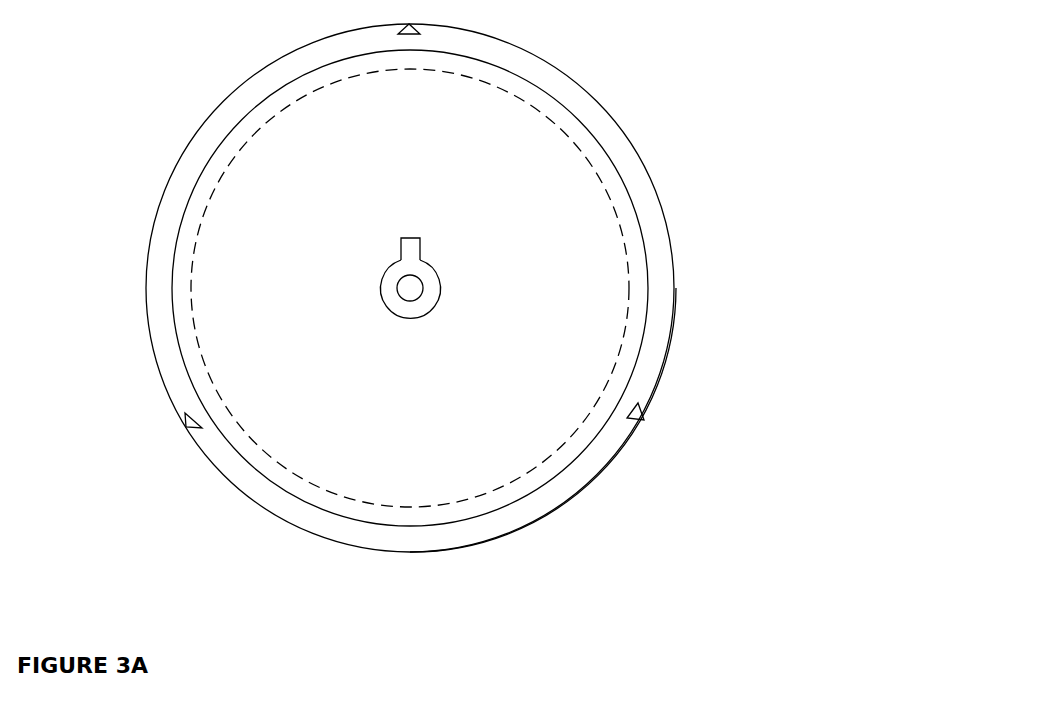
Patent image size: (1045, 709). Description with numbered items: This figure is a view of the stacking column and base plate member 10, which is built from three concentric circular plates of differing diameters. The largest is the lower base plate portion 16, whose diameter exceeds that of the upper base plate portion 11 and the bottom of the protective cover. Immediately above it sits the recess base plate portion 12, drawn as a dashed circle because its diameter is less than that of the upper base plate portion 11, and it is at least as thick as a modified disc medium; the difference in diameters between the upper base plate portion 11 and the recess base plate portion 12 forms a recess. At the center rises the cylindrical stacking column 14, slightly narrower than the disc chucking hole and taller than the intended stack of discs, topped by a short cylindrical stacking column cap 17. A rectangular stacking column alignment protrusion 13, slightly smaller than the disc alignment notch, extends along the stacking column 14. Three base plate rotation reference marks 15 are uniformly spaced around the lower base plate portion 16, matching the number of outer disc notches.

The stacking column and base plate member 10 is at (595, 58).
The upper base plate portion 11 is at (262, 100).
The recess base plate portion 12 is at (222, 168).
The stacking column alignment protrusion 13 is at (424, 237).
The stacking column 14 is at (448, 293).
The base plate rotation reference marks 15 is at (644, 423).
The lower base plate portion 16 is at (579, 499).
The stacking column cap 17 is at (397, 302).